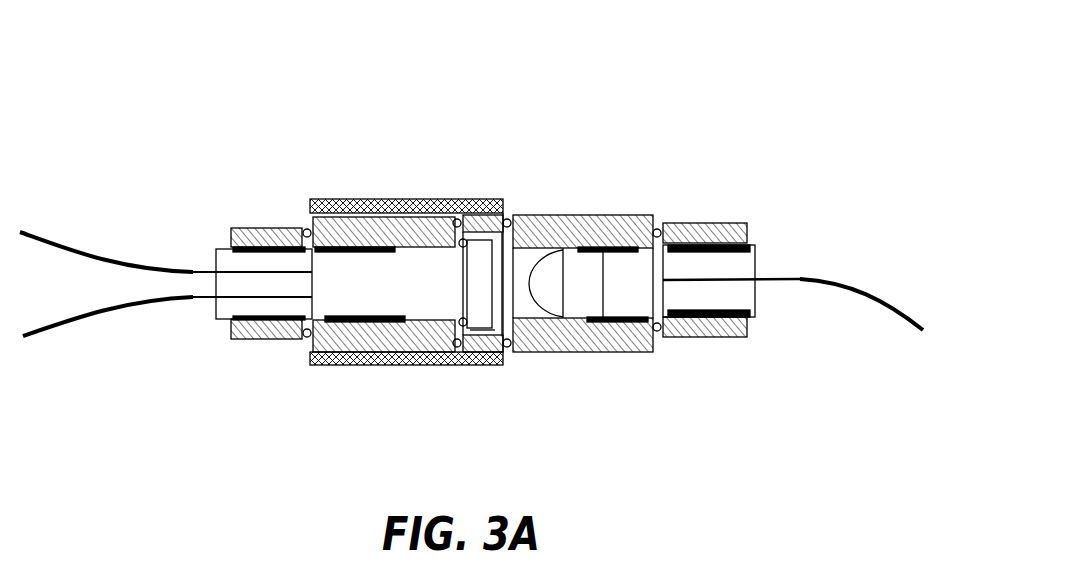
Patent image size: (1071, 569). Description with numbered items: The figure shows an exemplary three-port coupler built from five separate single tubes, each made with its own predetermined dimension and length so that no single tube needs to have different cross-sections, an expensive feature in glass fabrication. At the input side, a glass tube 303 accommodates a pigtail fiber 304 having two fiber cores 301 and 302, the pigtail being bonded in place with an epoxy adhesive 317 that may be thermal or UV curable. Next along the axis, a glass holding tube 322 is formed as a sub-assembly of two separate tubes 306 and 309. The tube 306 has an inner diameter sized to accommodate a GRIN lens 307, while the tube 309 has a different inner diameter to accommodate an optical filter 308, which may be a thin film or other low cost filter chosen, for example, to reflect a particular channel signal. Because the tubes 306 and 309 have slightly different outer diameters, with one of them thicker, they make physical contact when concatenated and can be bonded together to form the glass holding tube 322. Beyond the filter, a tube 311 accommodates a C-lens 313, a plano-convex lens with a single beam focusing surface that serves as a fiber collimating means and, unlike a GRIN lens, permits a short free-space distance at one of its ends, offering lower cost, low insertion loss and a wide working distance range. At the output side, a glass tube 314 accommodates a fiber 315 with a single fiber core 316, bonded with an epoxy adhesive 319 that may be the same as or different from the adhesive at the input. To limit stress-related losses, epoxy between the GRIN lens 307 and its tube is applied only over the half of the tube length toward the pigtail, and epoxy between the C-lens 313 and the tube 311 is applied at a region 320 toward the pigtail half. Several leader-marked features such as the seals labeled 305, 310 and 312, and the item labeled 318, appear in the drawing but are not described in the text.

The fiber core 301 is at (75, 247).
The fiber core 302 is at (128, 302).
The glass tube 303 is at (278, 329).
The pigtail fiber 304 is at (230, 263).
The O-ring seals 305 is at (457, 223).
The glass tube 306 is at (408, 338).
The GRIN lens 307 is at (412, 278).
The optical filter 308 is at (483, 313).
The glass tube 309 is at (505, 212).
The O-ring seals 310 is at (463, 243).
The glass tube 311 is at (572, 237).
The lens 312 is at (507, 343).
The C-lens 313 is at (592, 278).
The glass tube 314 is at (695, 323).
The fiber 315 is at (733, 270).
The fiber core 316 is at (807, 282).
The epoxy adhesive 317 is at (290, 250).
The electrodes 318 is at (355, 322).
The epoxy adhesive 319 is at (722, 313).
The epoxy region 320 is at (600, 248).
The glass holding tube 322 is at (463, 200).